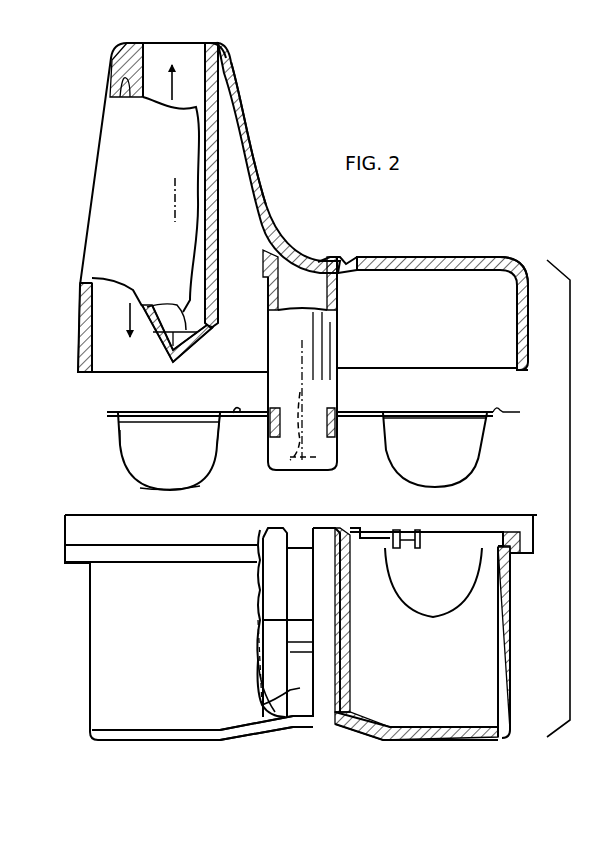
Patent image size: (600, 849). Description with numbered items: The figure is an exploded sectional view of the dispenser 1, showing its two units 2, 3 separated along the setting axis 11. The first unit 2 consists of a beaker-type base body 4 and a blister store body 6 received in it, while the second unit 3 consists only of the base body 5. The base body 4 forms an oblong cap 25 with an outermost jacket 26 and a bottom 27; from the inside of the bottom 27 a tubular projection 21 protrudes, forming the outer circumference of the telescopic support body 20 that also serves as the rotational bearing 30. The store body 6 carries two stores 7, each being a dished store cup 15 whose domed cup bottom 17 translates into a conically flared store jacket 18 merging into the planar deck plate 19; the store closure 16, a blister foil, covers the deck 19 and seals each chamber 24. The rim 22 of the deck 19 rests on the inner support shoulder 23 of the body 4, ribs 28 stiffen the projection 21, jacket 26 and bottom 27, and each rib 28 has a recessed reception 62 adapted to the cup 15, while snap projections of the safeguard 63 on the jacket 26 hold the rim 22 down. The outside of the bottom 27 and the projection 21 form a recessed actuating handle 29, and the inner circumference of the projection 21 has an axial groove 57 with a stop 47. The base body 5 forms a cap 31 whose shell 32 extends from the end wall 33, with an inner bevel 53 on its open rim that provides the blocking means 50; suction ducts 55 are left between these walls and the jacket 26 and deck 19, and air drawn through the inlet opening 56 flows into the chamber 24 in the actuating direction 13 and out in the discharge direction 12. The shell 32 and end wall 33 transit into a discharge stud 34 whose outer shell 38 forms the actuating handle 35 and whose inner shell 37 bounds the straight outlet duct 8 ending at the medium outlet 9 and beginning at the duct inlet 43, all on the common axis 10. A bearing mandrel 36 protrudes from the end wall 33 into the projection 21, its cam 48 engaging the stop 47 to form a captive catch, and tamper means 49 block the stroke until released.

The dispenser 1 is at (310, 102).
The first unit 2 is at (84, 728).
The second unit 3 is at (503, 250).
The base body 4 is at (90, 643).
The base body 5 is at (88, 262).
The store body 6 is at (105, 422).
The store 7 is at (135, 478).
The outlet duct 8 is at (185, 113).
The medium outlet 9 is at (197, 43).
The common axis 10 is at (172, 204).
The setting axis 11 is at (300, 347).
The discharge direction 12 is at (165, 95).
The actuating direction 13 is at (130, 317).
The store cup 15 is at (380, 430).
The store closure 16 is at (237, 414).
The cup bottom 17 is at (187, 482).
The store jacket 18 is at (122, 437).
The deck plate 19 is at (360, 412).
The support body 20 is at (257, 618).
The projection 21 is at (350, 606).
The rim 22 is at (493, 417).
The support shoulder 23 is at (360, 532).
The chamber 24 is at (210, 458).
The cap 25 is at (100, 728).
The jacket 26 is at (497, 708).
The bottom 27 is at (425, 725).
The rib 28 is at (395, 727).
The actuating handle 29 is at (290, 730).
The rotational bearing 30 is at (297, 538).
The cap 31 is at (516, 262).
The shell 32 is at (517, 325).
The end wall 33 is at (432, 268).
The discharge stud 34 is at (258, 126).
The actuating handle 35 is at (318, 253).
The bearing mandrel 36 is at (332, 334).
The inner shell 37 is at (214, 206).
The outer shell 38 is at (248, 165).
The duct inlet 43 is at (170, 306).
The stop 47 is at (315, 657).
The cam 48 is at (293, 418).
The tamper means 49 is at (63, 538).
The blocking means 50 is at (523, 572).
The inner bevel 53 is at (508, 367).
The suction duct 55 is at (492, 520).
The inlet opening 56 is at (97, 374).
The axial groove 57 is at (285, 690).
The recessed reception 62 is at (428, 612).
The safeguard 63 is at (397, 548).